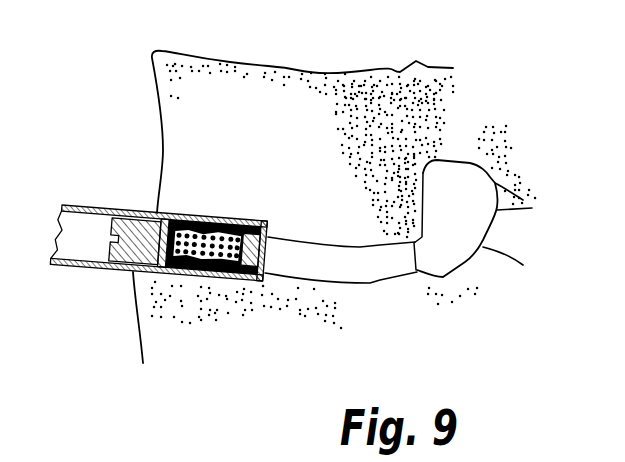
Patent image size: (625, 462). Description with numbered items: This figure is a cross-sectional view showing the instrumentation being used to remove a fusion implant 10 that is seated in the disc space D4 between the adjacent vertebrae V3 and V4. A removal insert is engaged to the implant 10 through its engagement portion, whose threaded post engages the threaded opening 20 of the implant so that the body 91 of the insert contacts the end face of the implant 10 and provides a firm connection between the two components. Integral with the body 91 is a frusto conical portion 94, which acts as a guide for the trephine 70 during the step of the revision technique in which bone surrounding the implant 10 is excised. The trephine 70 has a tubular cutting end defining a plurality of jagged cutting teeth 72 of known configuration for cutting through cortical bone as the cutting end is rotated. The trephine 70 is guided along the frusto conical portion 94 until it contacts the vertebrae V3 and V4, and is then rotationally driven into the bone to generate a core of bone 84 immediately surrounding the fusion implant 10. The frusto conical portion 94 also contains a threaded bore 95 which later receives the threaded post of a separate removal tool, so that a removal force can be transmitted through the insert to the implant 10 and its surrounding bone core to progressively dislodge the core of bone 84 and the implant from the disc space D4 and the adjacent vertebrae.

The fusion implant 10 is at (188, 277).
The threaded opening 20 is at (127, 210).
The trephine 70 is at (80, 197).
The cutting teeth 72 is at (268, 221).
The core of bone 84 is at (262, 280).
The body 91 is at (133, 275).
The frusto conical portion 94 is at (108, 270).
The threaded bore 95 is at (111, 237).
The vertebra V3 is at (358, 104).
The vertebra V4 is at (237, 303).
The disc space D4 is at (421, 255).